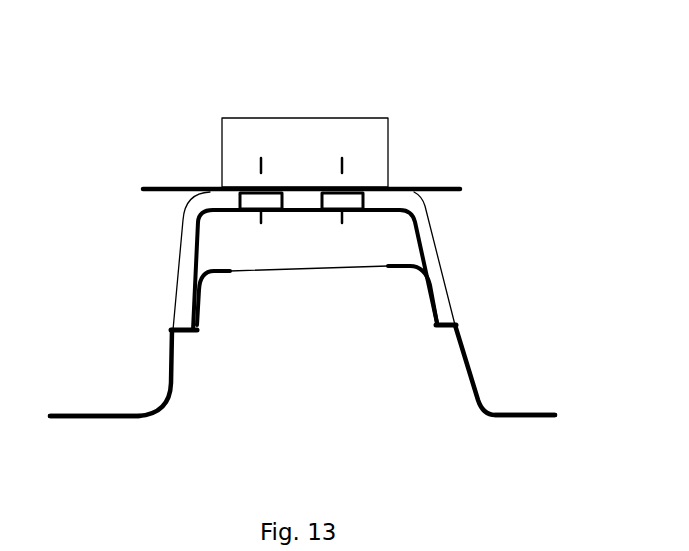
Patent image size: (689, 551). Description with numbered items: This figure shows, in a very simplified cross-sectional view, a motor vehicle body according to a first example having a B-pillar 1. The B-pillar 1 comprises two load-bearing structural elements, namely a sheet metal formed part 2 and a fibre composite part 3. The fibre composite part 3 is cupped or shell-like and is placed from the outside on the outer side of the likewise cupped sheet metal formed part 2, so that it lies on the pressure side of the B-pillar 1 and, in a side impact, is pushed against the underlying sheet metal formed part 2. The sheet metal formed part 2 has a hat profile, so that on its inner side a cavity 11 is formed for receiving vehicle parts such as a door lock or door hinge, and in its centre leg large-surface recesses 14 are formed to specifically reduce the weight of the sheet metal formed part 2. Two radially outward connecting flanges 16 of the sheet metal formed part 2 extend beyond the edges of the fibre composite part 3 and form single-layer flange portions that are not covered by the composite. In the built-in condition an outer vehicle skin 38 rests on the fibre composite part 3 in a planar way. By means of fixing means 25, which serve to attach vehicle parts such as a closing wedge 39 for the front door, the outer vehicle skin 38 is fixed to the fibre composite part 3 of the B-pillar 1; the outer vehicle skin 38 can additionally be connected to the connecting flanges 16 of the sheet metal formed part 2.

The B-pillar 1 is at (170, 317).
The sheet metal formed part 2 is at (537, 413).
The fibre composite part 3 is at (445, 265).
The cavity 11 is at (328, 397).
The large-surface recesses 14 is at (337, 271).
The connecting flanges 16 is at (97, 412).
The fixing means 25 is at (345, 198).
The outer vehicle skin 38 is at (443, 186).
The closing wedge 39 is at (288, 125).